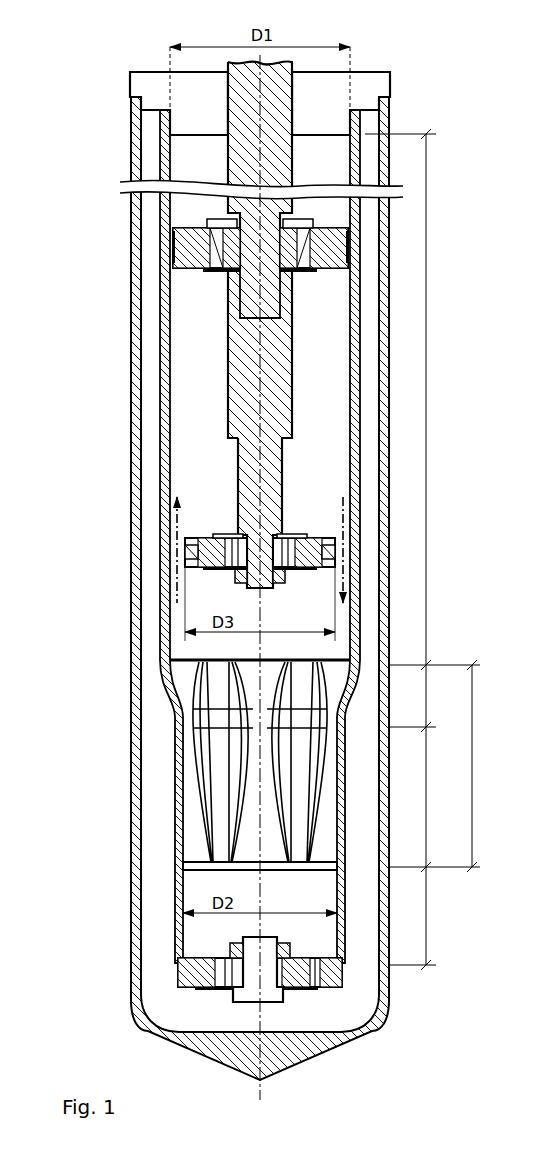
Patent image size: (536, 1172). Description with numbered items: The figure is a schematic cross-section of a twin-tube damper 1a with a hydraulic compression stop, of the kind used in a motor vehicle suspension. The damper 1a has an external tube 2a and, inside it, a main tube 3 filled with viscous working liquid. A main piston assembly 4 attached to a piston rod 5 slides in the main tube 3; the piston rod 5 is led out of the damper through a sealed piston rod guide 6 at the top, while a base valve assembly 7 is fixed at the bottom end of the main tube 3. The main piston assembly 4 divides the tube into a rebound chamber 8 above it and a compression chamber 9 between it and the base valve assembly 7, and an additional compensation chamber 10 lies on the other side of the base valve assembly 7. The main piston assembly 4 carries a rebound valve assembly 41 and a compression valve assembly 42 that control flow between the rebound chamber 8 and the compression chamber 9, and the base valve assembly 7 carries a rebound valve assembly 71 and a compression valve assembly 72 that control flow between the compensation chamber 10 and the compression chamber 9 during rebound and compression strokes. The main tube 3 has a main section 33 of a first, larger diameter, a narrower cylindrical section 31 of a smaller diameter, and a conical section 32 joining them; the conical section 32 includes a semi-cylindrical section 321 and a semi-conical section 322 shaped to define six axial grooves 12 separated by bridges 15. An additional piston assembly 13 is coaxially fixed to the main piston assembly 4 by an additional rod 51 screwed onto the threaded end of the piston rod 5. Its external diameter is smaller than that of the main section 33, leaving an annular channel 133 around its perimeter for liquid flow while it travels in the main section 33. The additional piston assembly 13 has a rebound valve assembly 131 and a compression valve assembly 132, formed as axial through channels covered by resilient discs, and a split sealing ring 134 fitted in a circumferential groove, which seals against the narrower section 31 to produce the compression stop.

The twin-tube damper 1a is at (103, 137).
The external tube 2a is at (133, 890).
The main tube 3 is at (160, 331).
The main piston assembly 4 is at (201, 259).
The rebound valve assembly 41 is at (193, 277).
The compression valve assembly 42 is at (223, 212).
The piston rod 5 is at (266, 157).
The additional rod 51 is at (243, 422).
The piston rod guide 6 is at (131, 87).
The base valve assembly 7 is at (199, 975).
The rebound valve assembly 71 is at (227, 950).
The compression valve assembly 72 is at (302, 993).
The rebound chamber 8 is at (195, 168).
The compression chamber 9 is at (195, 370).
The additional compensation chamber 10 is at (160, 848).
The axial grooves 12 is at (325, 820).
The additional piston assembly 13 is at (180, 539).
The rebound valve assembly 131 is at (296, 578).
The compression valve assembly 132 is at (222, 534).
The annular channel 133 is at (203, 560).
The sealing ring 134 is at (180, 547).
The bridges 15 is at (293, 819).
The narrower cylindrical section 31 is at (427, 913).
The conical section 32 is at (474, 727).
The semi-cylindrical section 321 is at (427, 775).
The semi-conical section 322 is at (427, 693).
The main section 33 is at (427, 608).